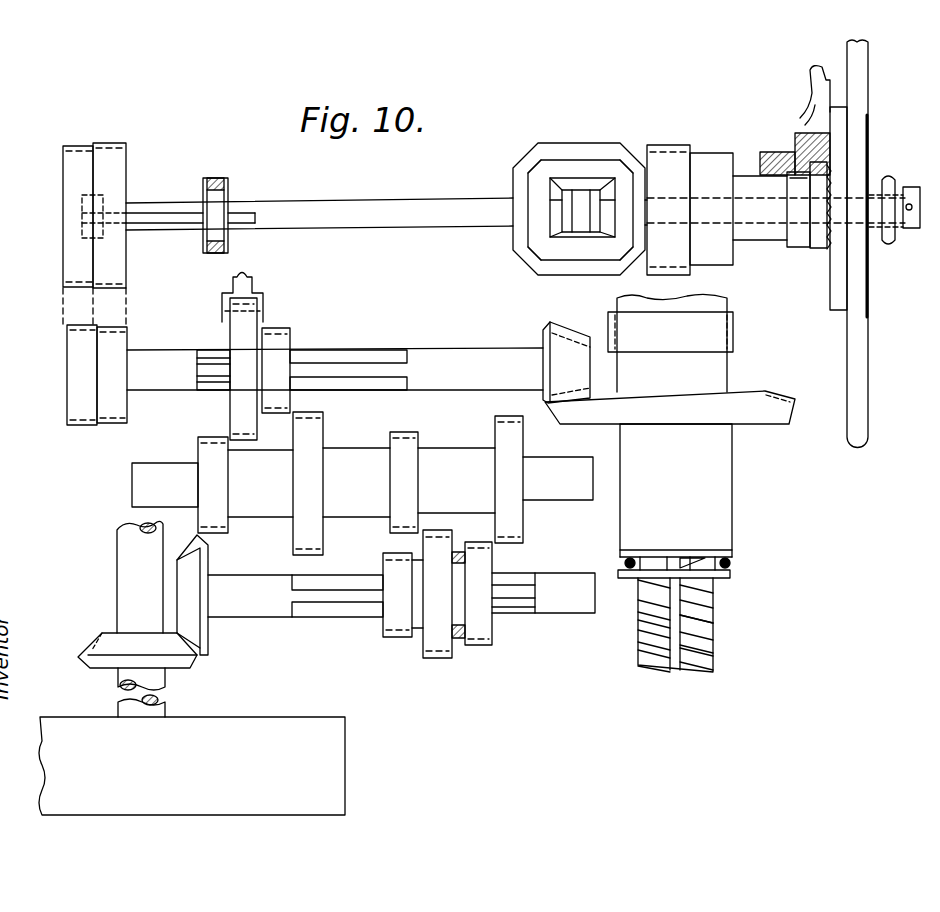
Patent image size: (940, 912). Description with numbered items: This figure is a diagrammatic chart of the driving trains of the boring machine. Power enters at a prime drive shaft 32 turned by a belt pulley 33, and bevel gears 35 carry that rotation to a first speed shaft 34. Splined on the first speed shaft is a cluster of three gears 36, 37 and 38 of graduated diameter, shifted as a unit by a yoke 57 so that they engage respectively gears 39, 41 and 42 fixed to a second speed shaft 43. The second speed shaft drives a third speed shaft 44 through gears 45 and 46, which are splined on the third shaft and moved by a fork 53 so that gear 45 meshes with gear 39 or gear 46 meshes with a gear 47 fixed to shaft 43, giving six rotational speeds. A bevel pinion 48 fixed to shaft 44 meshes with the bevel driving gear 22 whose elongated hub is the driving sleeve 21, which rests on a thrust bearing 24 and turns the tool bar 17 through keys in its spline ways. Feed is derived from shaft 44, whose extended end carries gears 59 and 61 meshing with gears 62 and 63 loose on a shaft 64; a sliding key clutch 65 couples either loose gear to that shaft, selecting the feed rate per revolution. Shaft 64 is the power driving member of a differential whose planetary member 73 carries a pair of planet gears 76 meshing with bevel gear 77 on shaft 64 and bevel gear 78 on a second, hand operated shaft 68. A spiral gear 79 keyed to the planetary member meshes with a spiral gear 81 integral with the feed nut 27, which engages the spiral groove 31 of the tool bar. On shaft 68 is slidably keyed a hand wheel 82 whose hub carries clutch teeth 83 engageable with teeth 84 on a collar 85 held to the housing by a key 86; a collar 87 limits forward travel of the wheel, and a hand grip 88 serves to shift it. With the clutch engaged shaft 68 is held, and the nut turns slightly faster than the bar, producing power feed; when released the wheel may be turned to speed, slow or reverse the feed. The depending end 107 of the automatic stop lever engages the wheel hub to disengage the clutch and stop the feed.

The gear 63 is at (68, 169).
The gear 62 is at (117, 163).
The sliding key clutch 65 is at (82, 219).
The shaft 64 is at (274, 210).
The gear 61 is at (72, 416).
The gear 59 is at (118, 420).
The fork 53 is at (256, 296).
The gear 46 is at (236, 331).
The gear 45 is at (283, 330).
The third speed shaft 44 is at (423, 347).
The bevel pinion 48 is at (545, 324).
The gear 47 is at (205, 450).
The second speed shaft 43 is at (172, 477).
The gear 39 is at (310, 434).
The gear 42 is at (413, 448).
The gear 41 is at (515, 456).
The spiral gear 81 is at (730, 332).
The feed nut 27 is at (718, 378).
The driving gear 22 is at (777, 398).
The driving sleeve 21 is at (718, 484).
The thrust bearing 24 is at (733, 574).
The spiral groove 31 is at (714, 645).
The tool bar 17 is at (700, 662).
The prime drive shaft 32 is at (120, 548).
The first speed shaft 34 is at (270, 606).
The bevel gears 35 is at (186, 658).
The belt pulley 33 is at (320, 752).
The gear 36 is at (396, 628).
The gear 38 is at (443, 648).
The gear 37 is at (488, 646).
The yoke 57 is at (459, 642).
The planetary member 73 is at (548, 148).
The planet gears 76 is at (588, 180).
The bevel gear 77 is at (555, 215).
The bevel gear 78 is at (610, 226).
The spiral gear 79 is at (670, 158).
The shaft 68 is at (705, 196).
The depending end 107 is at (805, 92).
The hand wheel 82 is at (855, 82).
The key 86 is at (795, 150).
The clutch teeth 83 is at (830, 182).
The collar 85 is at (797, 238).
The clutch teeth 84 is at (818, 250).
The hand grip 88 is at (888, 240).
The collar 87 is at (912, 230).